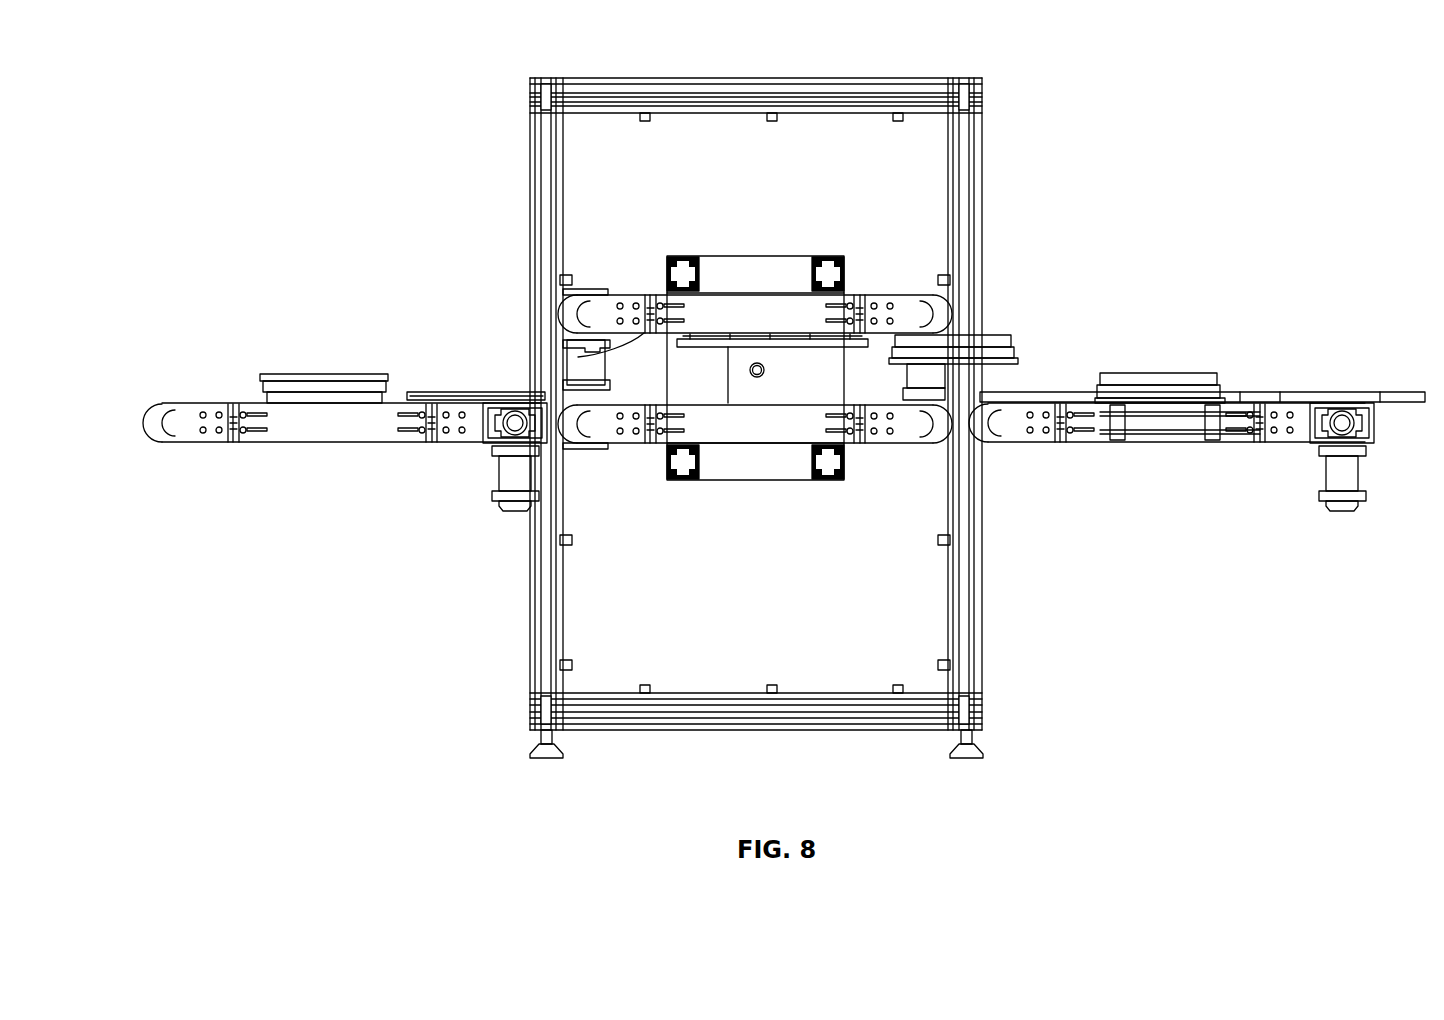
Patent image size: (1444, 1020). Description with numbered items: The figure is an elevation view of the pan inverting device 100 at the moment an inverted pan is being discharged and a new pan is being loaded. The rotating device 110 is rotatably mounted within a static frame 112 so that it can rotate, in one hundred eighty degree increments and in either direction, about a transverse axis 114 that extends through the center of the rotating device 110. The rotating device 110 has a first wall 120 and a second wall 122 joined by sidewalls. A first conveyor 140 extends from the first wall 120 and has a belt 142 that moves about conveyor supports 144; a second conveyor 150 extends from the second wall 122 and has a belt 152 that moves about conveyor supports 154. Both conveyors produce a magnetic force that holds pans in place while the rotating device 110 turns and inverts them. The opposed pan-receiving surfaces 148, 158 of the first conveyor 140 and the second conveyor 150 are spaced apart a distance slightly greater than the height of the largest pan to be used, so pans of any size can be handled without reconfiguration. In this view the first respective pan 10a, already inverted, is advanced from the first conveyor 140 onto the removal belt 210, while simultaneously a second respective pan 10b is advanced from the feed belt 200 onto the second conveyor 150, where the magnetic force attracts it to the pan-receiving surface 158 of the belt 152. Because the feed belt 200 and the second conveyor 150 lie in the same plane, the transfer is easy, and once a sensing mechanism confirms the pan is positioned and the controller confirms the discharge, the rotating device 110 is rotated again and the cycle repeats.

The pan inverting device 100 is at (398, 80).
The rotating device 110 is at (848, 200).
The static frame 112 is at (978, 640).
The transverse axis 114 is at (757, 380).
The first wall 120 is at (773, 256).
The second wall 122 is at (718, 481).
The first conveyor 140 is at (865, 295).
The belt 142 is at (642, 293).
The conveyor supports 144 is at (586, 315).
The pan-receiving surface 148 is at (567, 350).
The second conveyor 150 is at (610, 445).
The belt 152 is at (873, 443).
The conveyor supports 154 is at (945, 430).
The pan-receiving surface 158 is at (728, 403).
The feed belt 200 is at (168, 403).
The removal belt 210 is at (1302, 392).
The first respective pan 10a is at (990, 335).
The second respective pan 10b is at (327, 374).